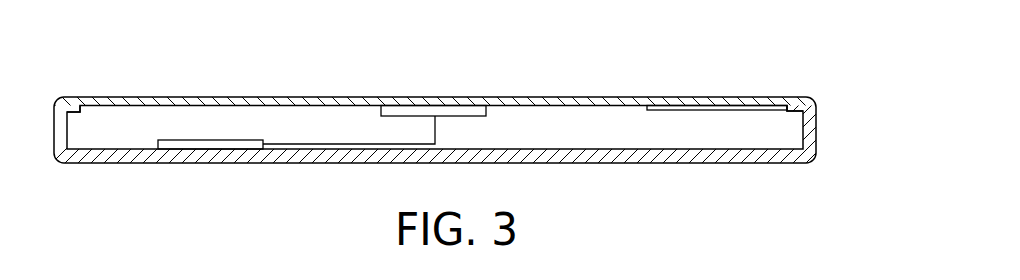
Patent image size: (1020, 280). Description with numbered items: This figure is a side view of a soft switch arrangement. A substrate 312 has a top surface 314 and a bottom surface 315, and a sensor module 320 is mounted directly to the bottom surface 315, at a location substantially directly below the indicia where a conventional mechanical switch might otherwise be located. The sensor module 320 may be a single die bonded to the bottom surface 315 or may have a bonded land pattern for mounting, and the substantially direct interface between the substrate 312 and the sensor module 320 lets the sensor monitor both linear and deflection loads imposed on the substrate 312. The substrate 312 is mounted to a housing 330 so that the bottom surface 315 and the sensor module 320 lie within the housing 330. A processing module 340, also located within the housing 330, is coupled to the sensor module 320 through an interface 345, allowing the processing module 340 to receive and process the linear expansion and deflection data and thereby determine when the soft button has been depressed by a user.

The substrate 312 is at (775, 98).
The top surface 314 is at (77, 100).
The bottom surface 315 is at (648, 109).
The sensor module 320 is at (467, 116).
The housing 330 is at (816, 148).
The processing module 340 is at (192, 140).
The interface 345 is at (370, 144).